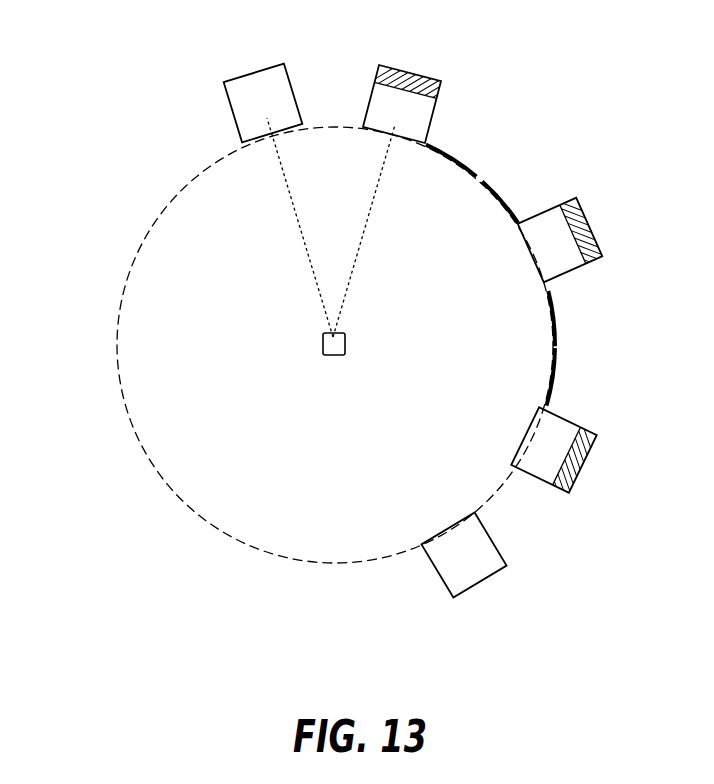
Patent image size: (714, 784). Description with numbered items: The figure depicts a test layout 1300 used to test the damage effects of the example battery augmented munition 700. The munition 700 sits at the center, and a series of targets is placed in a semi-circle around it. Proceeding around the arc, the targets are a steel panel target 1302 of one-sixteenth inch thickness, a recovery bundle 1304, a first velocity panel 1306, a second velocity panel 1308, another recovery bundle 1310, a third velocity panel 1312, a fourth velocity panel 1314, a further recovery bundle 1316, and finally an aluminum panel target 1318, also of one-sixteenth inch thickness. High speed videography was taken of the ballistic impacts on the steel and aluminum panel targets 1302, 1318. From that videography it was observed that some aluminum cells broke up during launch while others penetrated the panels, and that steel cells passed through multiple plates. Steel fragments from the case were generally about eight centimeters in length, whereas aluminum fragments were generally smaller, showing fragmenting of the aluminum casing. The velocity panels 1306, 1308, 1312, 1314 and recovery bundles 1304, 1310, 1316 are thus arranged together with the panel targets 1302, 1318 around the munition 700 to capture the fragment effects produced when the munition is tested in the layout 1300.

The test layout 1300 is at (130, 198).
The battery augmented munition 700 is at (340, 357).
The steel panel target 1302 is at (290, 78).
The recovery bundle 1304 is at (442, 83).
The first velocity panel 1306 is at (464, 160).
The second velocity panel 1308 is at (507, 208).
The recovery bundle 1310 is at (587, 217).
The third velocity panel 1312 is at (555, 328).
The fourth velocity panel 1314 is at (553, 380).
The recovery bundle 1316 is at (597, 435).
The aluminum panel target 1318 is at (507, 560).